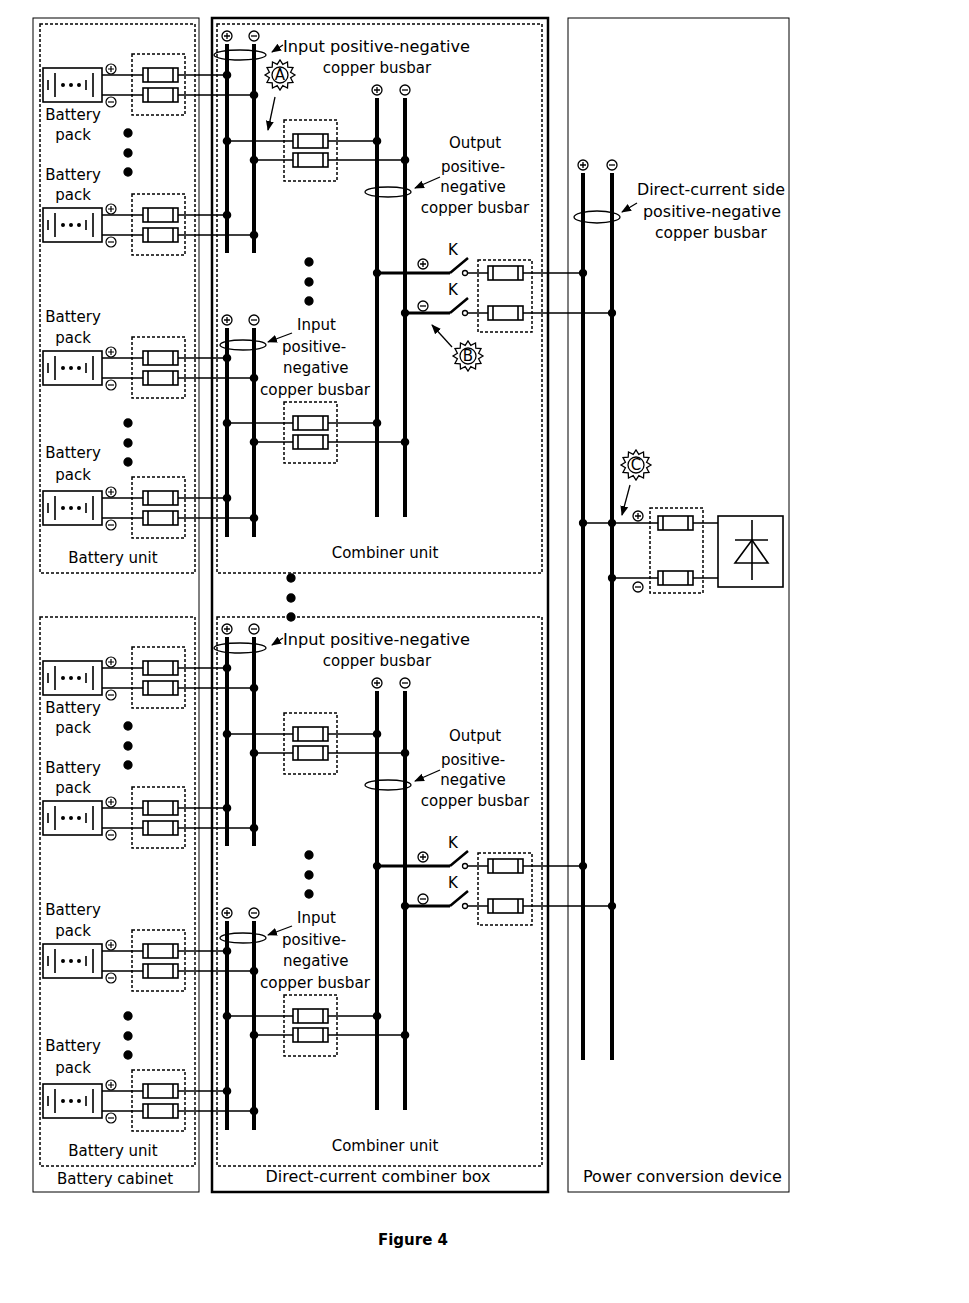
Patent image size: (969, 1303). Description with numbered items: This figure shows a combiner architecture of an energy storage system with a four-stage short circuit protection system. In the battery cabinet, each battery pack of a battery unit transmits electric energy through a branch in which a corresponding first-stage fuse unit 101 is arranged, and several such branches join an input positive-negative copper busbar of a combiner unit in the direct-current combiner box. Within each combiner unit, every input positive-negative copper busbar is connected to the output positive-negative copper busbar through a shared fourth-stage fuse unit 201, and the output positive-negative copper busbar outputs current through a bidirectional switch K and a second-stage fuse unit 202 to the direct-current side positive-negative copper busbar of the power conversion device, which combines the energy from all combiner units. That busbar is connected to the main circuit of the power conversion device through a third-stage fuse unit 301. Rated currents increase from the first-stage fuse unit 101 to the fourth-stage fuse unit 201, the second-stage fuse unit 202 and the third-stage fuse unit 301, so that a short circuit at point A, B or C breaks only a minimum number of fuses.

The first-stage fuse unit 101 is at (145, 54).
The fourth-stage fuse unit 201 is at (296, 121).
The second-stage fuse unit 202 is at (490, 260).
The third-stage fuse unit 301 is at (665, 508).